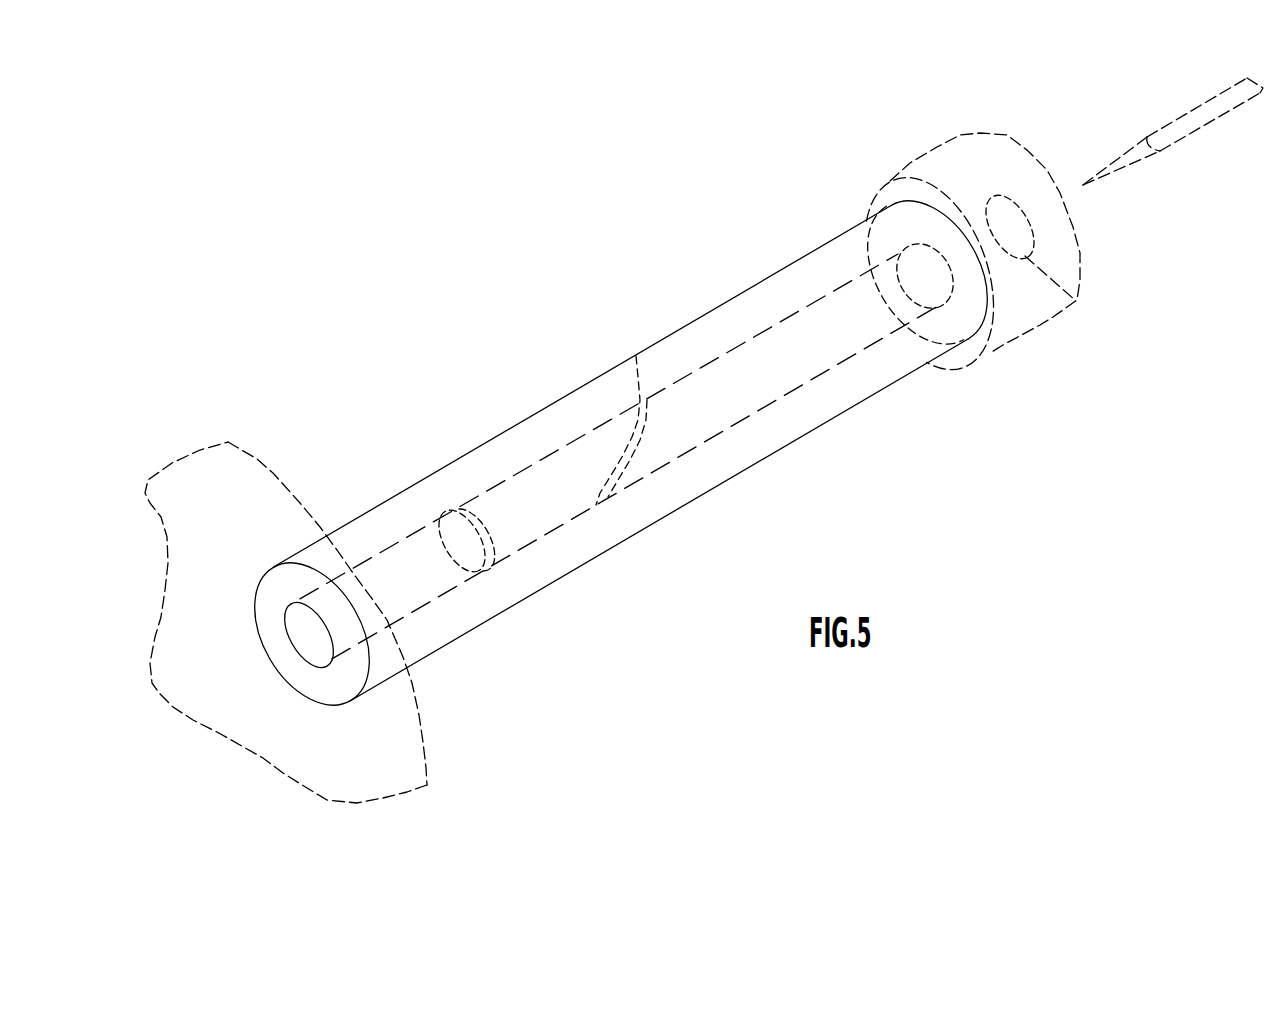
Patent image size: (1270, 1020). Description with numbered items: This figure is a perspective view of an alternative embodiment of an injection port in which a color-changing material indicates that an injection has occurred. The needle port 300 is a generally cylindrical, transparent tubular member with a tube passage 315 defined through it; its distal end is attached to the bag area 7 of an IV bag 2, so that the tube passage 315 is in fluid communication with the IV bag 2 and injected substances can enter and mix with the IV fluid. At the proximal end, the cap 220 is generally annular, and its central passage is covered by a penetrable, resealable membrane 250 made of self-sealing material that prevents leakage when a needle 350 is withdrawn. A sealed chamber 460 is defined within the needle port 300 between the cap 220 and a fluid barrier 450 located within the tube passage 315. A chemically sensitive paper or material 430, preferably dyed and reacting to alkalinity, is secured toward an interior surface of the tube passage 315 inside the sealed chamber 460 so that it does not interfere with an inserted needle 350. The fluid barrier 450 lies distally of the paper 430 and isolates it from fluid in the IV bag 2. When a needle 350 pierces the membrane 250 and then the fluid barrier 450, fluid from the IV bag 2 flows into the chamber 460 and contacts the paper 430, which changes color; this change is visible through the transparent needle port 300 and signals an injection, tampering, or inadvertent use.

The IV bag 2 is at (198, 414).
The bag area 7 is at (266, 466).
The needle port 300 is at (434, 394).
The tube passage 315 is at (307, 637).
The sealed chamber 460 is at (749, 415).
The chemically sensitive paper 430 is at (636, 356).
The fluid barrier 450 is at (465, 598).
The cap 220 is at (1030, 331).
The membrane 250 is at (1075, 297).
The needle 350 is at (1188, 137).